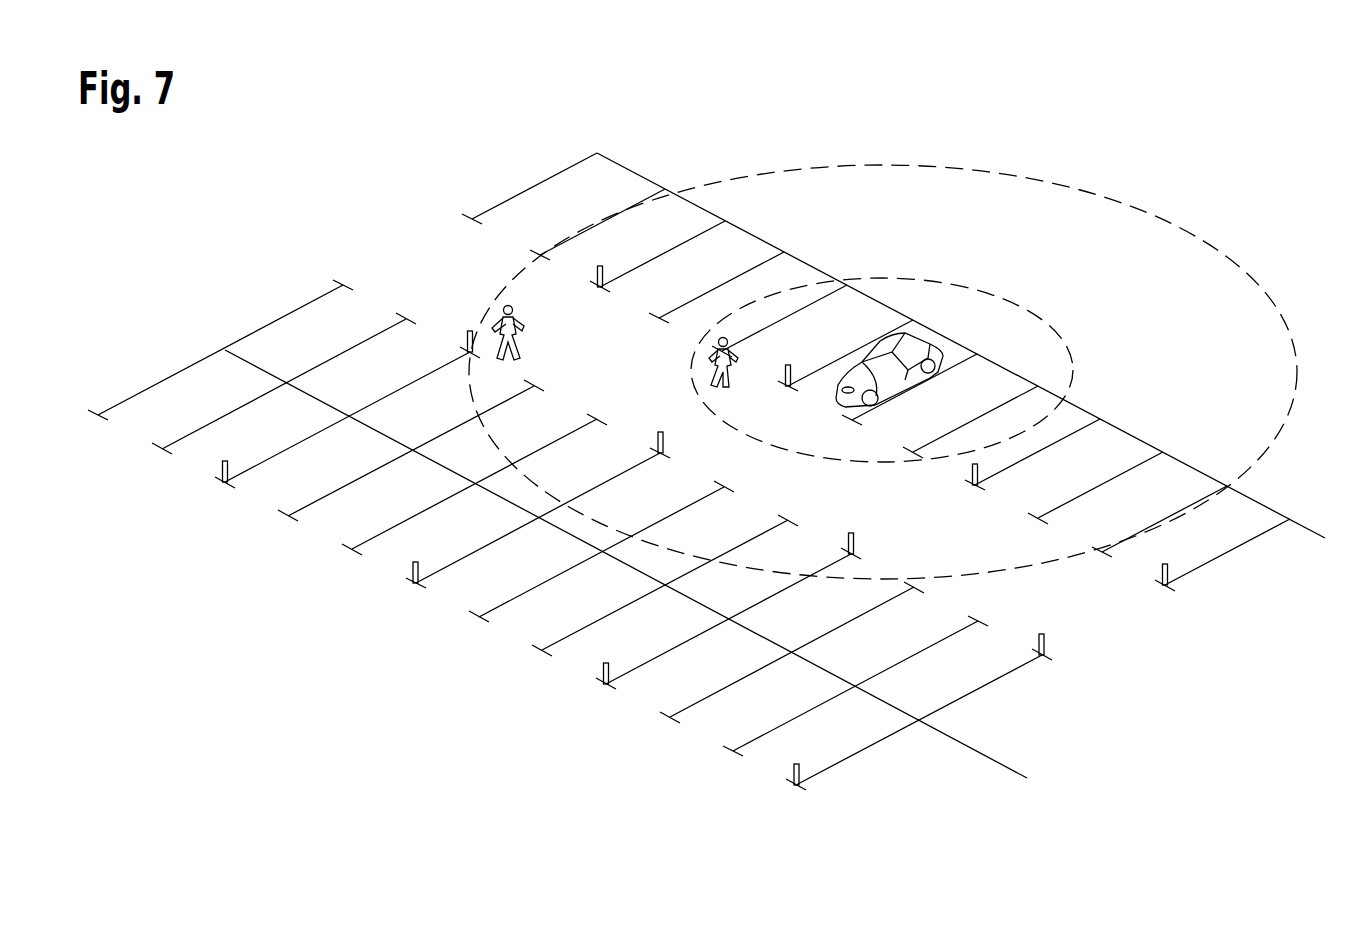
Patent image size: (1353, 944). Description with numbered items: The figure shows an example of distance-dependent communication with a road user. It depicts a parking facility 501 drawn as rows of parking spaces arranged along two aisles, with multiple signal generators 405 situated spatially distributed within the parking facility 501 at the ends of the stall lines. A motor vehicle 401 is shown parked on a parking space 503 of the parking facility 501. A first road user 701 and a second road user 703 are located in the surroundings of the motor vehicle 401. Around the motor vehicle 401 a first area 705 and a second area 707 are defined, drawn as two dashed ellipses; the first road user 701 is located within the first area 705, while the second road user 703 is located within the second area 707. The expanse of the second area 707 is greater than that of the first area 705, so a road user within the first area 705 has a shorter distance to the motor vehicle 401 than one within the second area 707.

The parking facility 501 is at (240, 233).
The parking space 503 is at (552, 207).
The signal generator 405 is at (222, 470).
The motor vehicle 401 is at (920, 333).
The first road user 701 is at (708, 372).
The second road user 703 is at (492, 315).
The first area 705 is at (1045, 322).
The second area 707 is at (1187, 230).